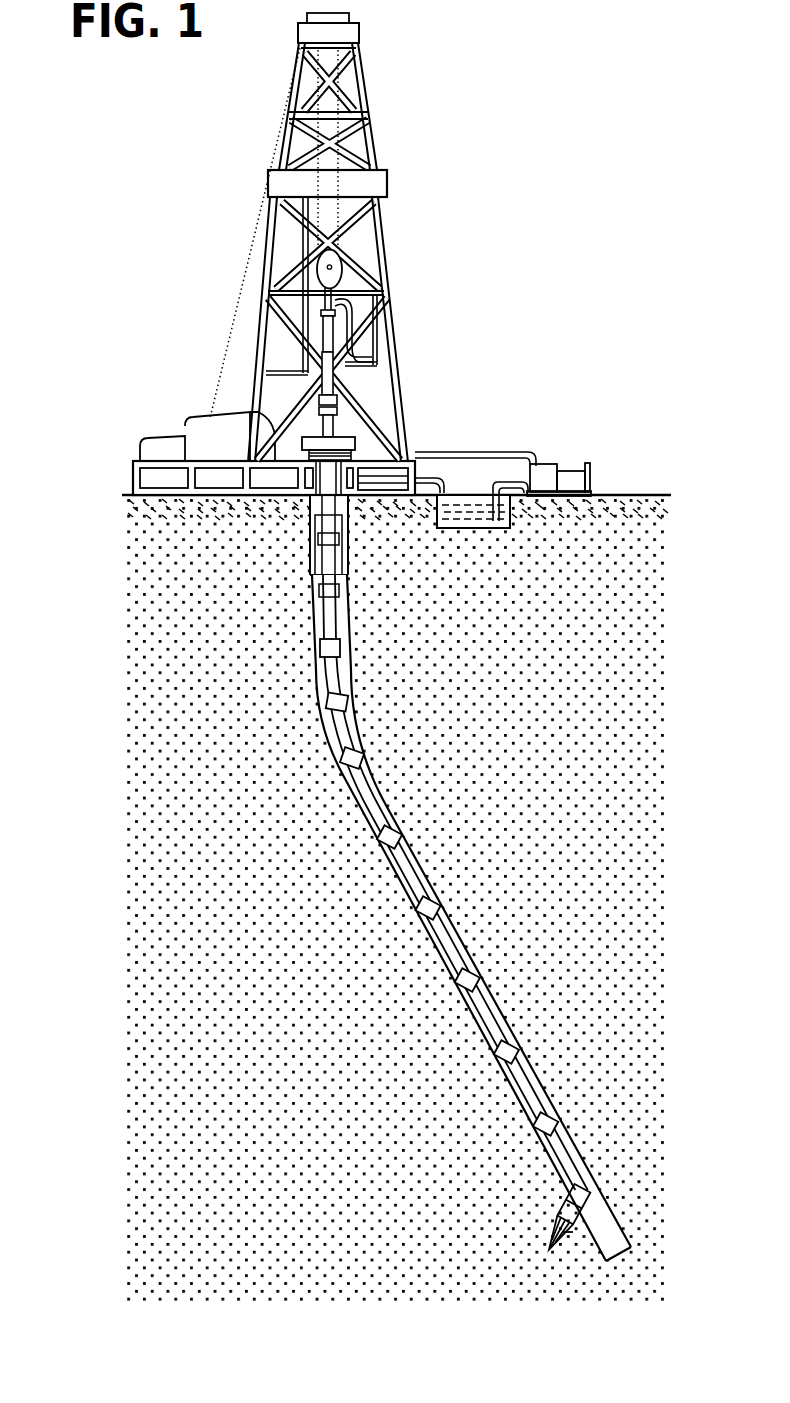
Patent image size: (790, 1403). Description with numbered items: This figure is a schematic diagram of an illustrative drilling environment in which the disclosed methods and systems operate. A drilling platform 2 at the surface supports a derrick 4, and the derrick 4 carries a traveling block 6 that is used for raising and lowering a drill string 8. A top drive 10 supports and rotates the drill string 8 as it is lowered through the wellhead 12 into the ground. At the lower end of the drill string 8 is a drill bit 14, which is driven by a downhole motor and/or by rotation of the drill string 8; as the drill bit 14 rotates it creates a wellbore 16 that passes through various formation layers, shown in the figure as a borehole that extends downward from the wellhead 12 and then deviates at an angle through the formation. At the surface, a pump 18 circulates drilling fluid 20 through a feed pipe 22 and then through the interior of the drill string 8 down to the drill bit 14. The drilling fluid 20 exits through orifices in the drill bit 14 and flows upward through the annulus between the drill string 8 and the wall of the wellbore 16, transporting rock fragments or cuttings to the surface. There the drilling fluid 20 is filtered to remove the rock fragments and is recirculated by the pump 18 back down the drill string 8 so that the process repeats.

The drilling platform 2 is at (133, 466).
The derrick 4 is at (385, 128).
The traveling block 6 is at (341, 262).
The drill string 8 is at (333, 626).
The top drive 10 is at (331, 332).
The wellhead 12 is at (345, 435).
The drill bit 14 is at (630, 1241).
The wellbore 16 is at (349, 630).
The pump 18 is at (542, 470).
The drilling fluid 20 is at (452, 515).
The feed pipe 22 is at (483, 452).